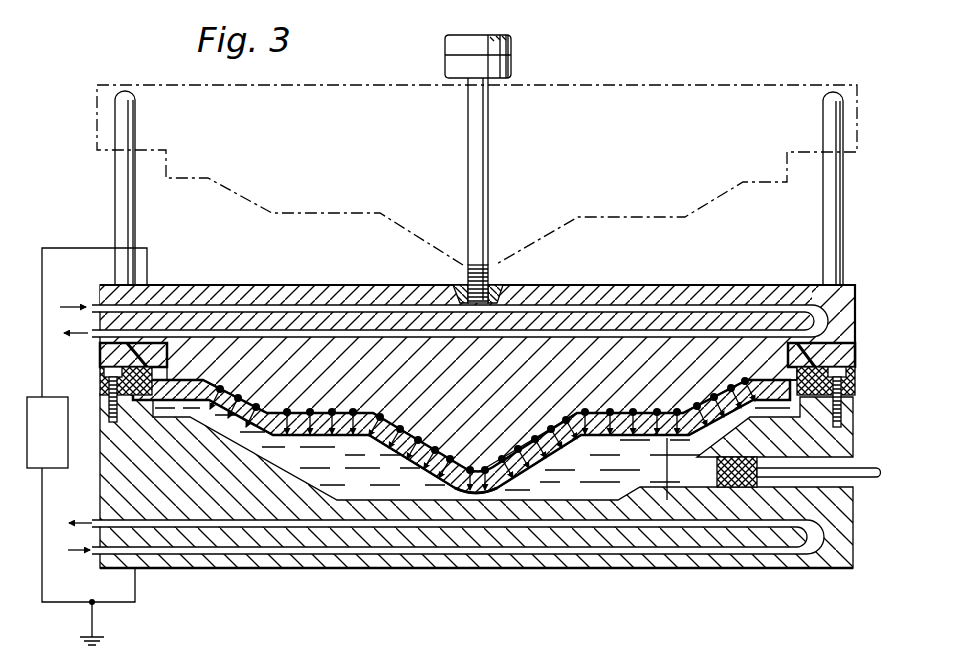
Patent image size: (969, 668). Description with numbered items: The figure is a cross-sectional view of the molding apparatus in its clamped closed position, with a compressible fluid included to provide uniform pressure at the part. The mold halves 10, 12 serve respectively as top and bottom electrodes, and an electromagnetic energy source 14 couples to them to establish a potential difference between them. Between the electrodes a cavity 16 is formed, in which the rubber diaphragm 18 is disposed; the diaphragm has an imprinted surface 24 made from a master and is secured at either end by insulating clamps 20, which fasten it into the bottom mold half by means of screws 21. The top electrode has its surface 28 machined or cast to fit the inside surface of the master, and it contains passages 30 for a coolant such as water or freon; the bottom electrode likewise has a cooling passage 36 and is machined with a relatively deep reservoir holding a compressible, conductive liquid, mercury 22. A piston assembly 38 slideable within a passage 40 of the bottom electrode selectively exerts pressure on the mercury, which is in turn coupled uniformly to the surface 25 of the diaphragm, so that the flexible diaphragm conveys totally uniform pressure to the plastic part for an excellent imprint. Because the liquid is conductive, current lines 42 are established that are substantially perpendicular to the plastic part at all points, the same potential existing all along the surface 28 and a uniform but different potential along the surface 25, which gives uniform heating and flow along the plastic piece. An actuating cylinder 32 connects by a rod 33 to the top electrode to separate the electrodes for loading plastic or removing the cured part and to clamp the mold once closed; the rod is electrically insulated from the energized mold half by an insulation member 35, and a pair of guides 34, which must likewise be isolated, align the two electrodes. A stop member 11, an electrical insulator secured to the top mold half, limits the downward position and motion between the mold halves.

The top electrode 10 is at (855, 288).
The stop member 11 is at (100, 347).
The bottom electrode 12 is at (853, 533).
The electromagnetic energy source 14 is at (87, 425).
The cavity 16 is at (590, 413).
The rubber diaphragm 18 is at (520, 477).
The insulating clamps 20 is at (100, 374).
The screws 21 is at (103, 410).
The mercury 22 is at (368, 493).
The imprinted surface 24 is at (373, 413).
The surface of the diaphragm 25 is at (667, 500).
The surface of the top electrode 28 is at (697, 412).
The passages 30 is at (676, 302).
The actuating cylinder 32 is at (510, 48).
The rod 33 is at (483, 182).
The guides 34 is at (135, 128).
The insulation member 35 is at (500, 285).
The cooling passage 36 is at (745, 553).
The piston assembly 38 is at (757, 462).
The passage 40 is at (840, 466).
The current lines 42 is at (497, 488).